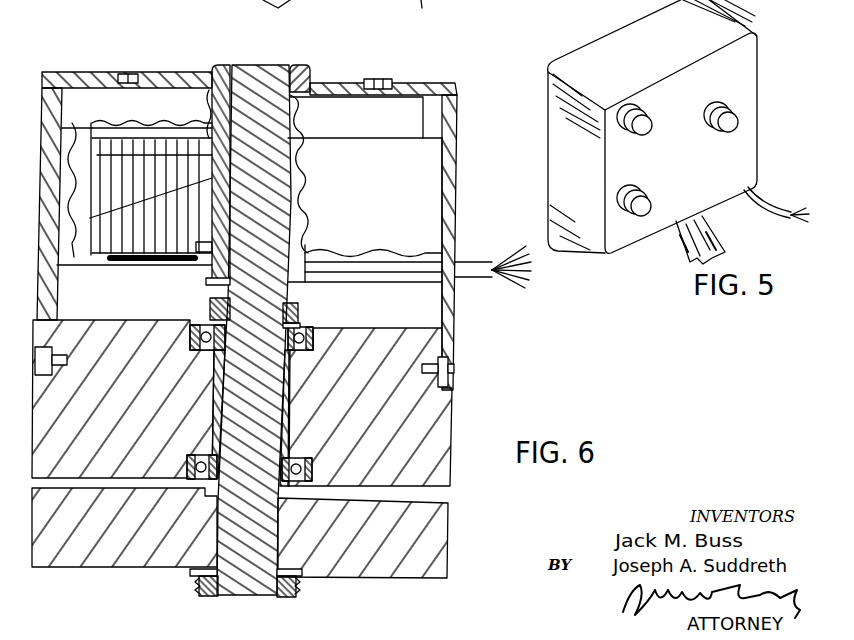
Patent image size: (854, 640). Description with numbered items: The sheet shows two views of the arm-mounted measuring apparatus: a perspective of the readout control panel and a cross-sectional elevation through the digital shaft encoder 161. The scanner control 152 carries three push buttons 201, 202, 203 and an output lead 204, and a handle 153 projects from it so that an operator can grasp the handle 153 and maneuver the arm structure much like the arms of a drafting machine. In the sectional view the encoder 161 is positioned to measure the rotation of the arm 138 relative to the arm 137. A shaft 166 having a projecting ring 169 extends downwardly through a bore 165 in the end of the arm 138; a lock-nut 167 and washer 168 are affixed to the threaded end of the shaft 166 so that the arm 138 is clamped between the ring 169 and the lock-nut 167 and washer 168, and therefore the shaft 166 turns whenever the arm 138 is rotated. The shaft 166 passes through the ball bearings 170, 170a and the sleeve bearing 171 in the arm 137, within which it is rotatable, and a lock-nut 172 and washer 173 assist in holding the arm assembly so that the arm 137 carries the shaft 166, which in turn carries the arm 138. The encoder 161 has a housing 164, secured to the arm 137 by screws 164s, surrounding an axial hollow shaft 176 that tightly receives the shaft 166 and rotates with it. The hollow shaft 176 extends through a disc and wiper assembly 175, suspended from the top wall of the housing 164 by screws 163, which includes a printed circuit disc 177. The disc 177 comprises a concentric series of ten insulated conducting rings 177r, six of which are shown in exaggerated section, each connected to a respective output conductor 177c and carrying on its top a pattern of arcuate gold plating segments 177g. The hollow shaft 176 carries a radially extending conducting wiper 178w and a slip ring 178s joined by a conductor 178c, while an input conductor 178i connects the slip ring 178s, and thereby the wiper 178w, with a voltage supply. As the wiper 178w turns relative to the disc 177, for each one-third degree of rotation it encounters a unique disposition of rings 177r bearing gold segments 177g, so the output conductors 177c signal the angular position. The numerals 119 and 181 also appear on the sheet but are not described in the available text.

In FIG. 6, the drive rod 119 is at (438, 10).
In FIG. 6, the arm 137 is at (452, 430).
In FIG. 6, the arm 138 is at (450, 530).
In FIG. 5, the scanner control 152 is at (649, 58).
In FIG. 5, the handle 153 is at (722, 242).
In FIG. 6, the digital shaft encoder 161 is at (473, 175).
In FIG. 6, the screws 163 is at (370, 85).
In FIG. 6, the housing 164 is at (168, 76).
In FIG. 6, the screws 164s is at (453, 361).
In FIG. 6, the bore 165 is at (210, 543).
In FIG. 6, the shaft 166 is at (228, 598).
In FIG. 6, the lock-nut 167 is at (294, 592).
In FIG. 6, the washer 168 is at (300, 578).
In FIG. 6, the projecting ring 169 is at (290, 487).
In FIG. 6, the ball bearing 170 is at (310, 463).
In FIG. 6, the ball bearing 170a is at (192, 345).
In FIG. 6, the sleeve bearing 171 is at (213, 403).
In FIG. 6, the lock-nut 172 is at (297, 308).
In FIG. 6, the washer 173 is at (298, 324).
In FIG. 6, the disc and wiper assembly 175 is at (422, 225).
In FIG. 6, the axial hollow shaft 176 is at (310, 70).
In FIG. 6, the printed circuit disc 177 is at (136, 264).
In FIG. 6, the output conductor 177c is at (100, 250).
In FIG. 6, the arcuate gold plating segments 177g is at (152, 140).
In FIG. 6, the insulated conducting rings 177r is at (98, 163).
In FIG. 6, the conductor 178c is at (236, 50).
In FIG. 6, the input conductor 178i is at (204, 256).
In FIG. 6, the slip ring 178s is at (307, 243).
In FIG. 6, the conducting wiper 178w is at (110, 123).
In FIG. 6, the brush shaft 181 is at (481, 280).
In FIG. 5, the push button 201 is at (746, 90).
In FIG. 5, the push button 202 is at (638, 192).
In FIG. 5, the push button 203 is at (648, 115).
In FIG. 5, the output lead 204 is at (773, 207).